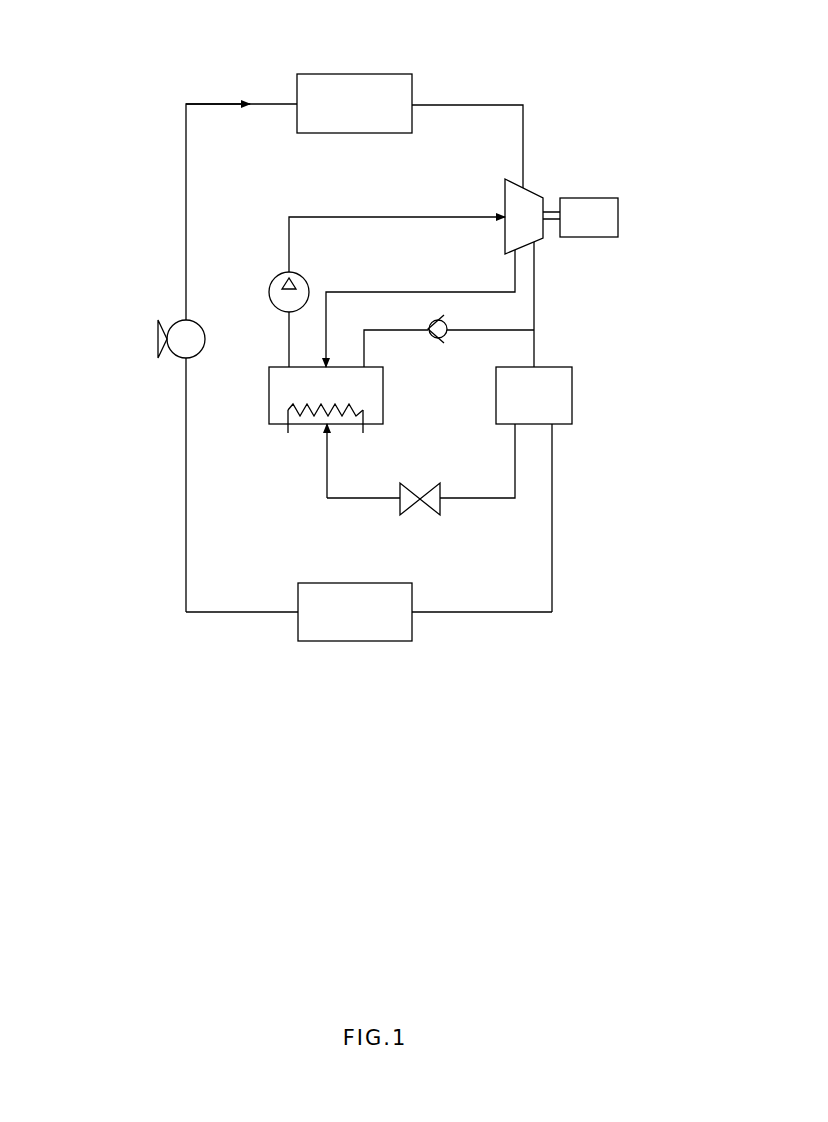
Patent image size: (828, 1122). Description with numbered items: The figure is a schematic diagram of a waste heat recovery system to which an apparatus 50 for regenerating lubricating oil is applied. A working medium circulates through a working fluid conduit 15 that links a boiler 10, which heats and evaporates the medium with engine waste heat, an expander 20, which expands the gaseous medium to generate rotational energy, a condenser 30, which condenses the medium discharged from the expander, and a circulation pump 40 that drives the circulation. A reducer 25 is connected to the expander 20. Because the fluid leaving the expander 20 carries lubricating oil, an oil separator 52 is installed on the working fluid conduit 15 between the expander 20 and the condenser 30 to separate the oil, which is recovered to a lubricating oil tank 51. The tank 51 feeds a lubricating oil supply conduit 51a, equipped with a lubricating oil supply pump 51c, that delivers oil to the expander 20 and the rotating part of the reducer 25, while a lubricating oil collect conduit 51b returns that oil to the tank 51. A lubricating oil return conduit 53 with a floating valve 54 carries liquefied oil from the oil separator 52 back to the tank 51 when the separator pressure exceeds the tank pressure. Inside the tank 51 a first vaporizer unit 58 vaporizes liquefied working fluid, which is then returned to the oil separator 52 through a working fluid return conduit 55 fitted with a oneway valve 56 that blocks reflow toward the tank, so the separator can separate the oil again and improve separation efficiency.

The boiler 10 is at (353, 74).
The expander 20 is at (528, 193).
The reducer 25 is at (587, 198).
The condenser 30 is at (352, 641).
The circulation pump 40 is at (158, 339).
The working fluid conduit 15 is at (534, 277).
The apparatus for regenerating lubricating oil 50 is at (569, 339).
The lubricating oil tank 51 is at (269, 395).
The lubricating oil supply conduit 51a is at (395, 217).
The lubricating oil collect conduit 51b is at (420, 292).
The lubricating oil supply pump 51c is at (269, 292).
The oil separator 52 is at (572, 392).
The lubricating oil return conduit 53 is at (478, 499).
The floating valve 54 is at (420, 498).
The working fluid return conduit 55 is at (470, 331).
The oneway valve 56 is at (446, 318).
The first vaporizer unit 58 is at (356, 404).